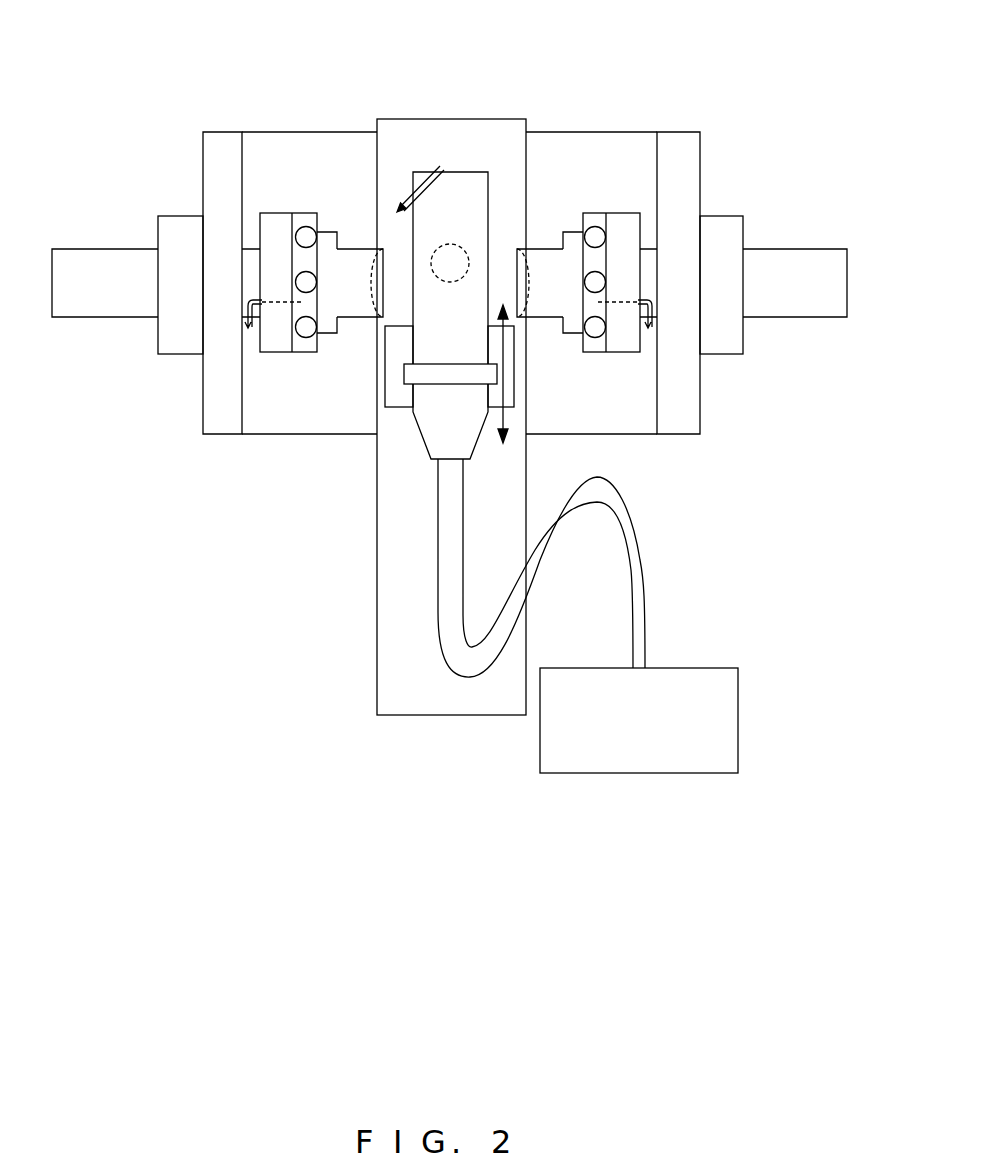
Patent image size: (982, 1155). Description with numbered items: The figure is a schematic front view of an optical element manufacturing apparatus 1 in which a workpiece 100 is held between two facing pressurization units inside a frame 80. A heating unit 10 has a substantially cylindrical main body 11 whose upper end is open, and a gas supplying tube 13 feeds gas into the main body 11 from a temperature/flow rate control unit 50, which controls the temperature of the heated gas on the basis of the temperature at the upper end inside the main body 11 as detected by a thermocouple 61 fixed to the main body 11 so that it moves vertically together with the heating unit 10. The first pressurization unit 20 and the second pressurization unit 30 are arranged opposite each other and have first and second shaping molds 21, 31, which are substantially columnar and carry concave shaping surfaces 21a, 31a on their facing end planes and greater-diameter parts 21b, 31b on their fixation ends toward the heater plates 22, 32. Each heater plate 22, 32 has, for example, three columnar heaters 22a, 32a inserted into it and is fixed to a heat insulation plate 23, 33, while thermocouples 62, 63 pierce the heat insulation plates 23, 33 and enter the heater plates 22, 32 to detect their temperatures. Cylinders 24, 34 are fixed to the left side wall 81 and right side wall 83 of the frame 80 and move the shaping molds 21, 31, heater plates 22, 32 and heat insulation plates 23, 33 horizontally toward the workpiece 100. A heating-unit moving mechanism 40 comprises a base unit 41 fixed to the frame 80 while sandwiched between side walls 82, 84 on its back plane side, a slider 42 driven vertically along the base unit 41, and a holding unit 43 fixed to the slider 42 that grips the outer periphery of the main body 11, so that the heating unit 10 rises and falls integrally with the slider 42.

The optical element manufacturing apparatus 1 is at (461, 434).
The heating unit 10 is at (463, 222).
The main body 11 is at (469, 249).
The gas supplying tube 13 is at (591, 568).
The first pressurization unit 20 is at (239, 274).
The first shaping mold 21 is at (292, 213).
The shaping surface 21a is at (384, 276).
The greater-diameter part 21b is at (304, 203).
The heater plate 22 is at (276, 274).
The columnar heater 22a is at (267, 191).
The heat insulation plate 23 is at (273, 347).
The cylinder 24 is at (105, 329).
The second pressurization unit 30 is at (687, 272).
The second shaping mold 31 is at (624, 277).
The shaping surface 31a is at (512, 274).
The greater-diameter part 31b is at (595, 355).
The heater plate 32 is at (647, 272).
The columnar heater 32a is at (648, 365).
The heat insulation plate 33 is at (630, 212).
The cylinder 34 is at (806, 330).
The heating-unit moving mechanism 40 is at (516, 392).
The base unit 41 is at (451, 451).
The slider 42 is at (398, 403).
The holding unit 43 is at (410, 378).
The temperature/flow rate control unit 50 is at (639, 767).
The thermocouple 61 is at (430, 165).
The thermocouple 62 is at (284, 306).
The thermocouple 63 is at (617, 326).
The frame 80 is at (470, 277).
The left side wall 81 is at (201, 323).
The side wall 82 is at (296, 323).
The right side wall 83 is at (718, 268).
The side wall 84 is at (614, 237).
The workpiece 100 is at (469, 175).